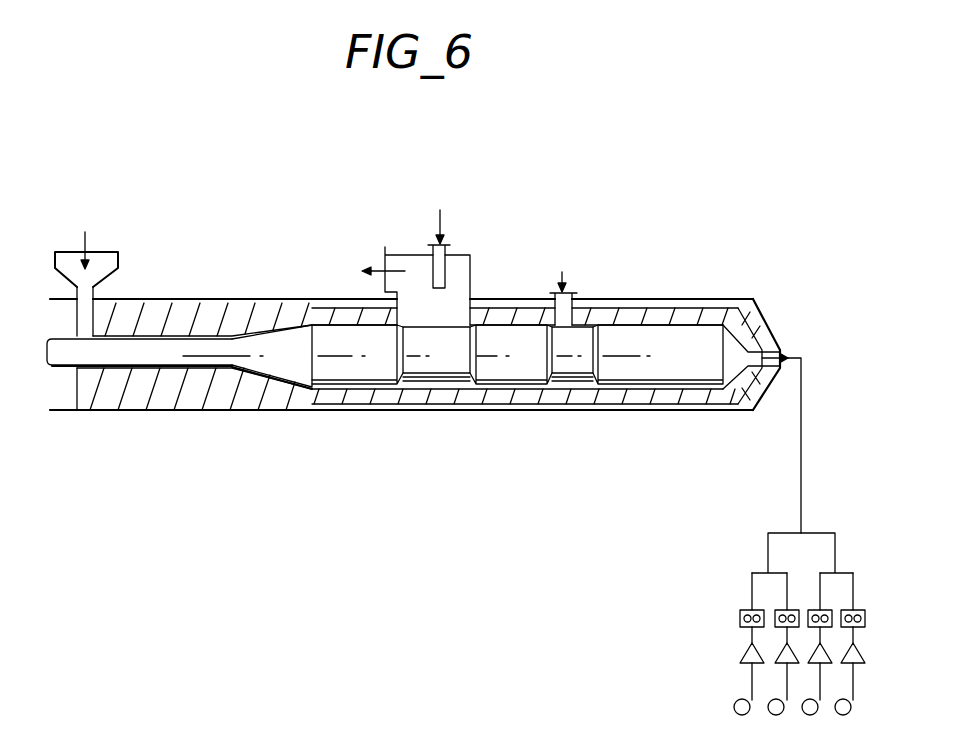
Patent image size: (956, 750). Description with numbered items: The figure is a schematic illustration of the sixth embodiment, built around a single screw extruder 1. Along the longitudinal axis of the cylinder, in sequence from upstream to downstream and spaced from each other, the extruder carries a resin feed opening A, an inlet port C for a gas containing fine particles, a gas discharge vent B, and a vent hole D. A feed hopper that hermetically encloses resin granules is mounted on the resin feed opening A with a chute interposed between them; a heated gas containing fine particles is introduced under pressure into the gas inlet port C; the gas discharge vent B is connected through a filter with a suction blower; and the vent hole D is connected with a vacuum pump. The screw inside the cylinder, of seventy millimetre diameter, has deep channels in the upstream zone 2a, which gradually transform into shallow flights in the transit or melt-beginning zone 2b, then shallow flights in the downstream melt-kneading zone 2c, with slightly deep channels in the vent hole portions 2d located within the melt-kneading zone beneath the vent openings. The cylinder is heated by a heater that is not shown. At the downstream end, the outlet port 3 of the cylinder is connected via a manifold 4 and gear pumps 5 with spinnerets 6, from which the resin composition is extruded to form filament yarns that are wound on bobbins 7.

The single screw extruder 1 is at (168, 298).
The upstream zone 2a is at (213, 345).
The melt-beginning zone 2b is at (267, 340).
The melt-kneading zone 2c is at (483, 335).
The vent hole portions 2d is at (575, 340).
The outlet port 3 is at (762, 429).
The manifold 4 is at (768, 551).
The gear pumps 5 is at (740, 618).
The spinnerets 6 is at (740, 654).
The bobbins 7 is at (734, 706).
The resin feed opening A is at (93, 249).
The gas discharge vent B is at (414, 284).
The inlet port for a gas containing fine particles C is at (444, 248).
The vent hole D is at (566, 293).